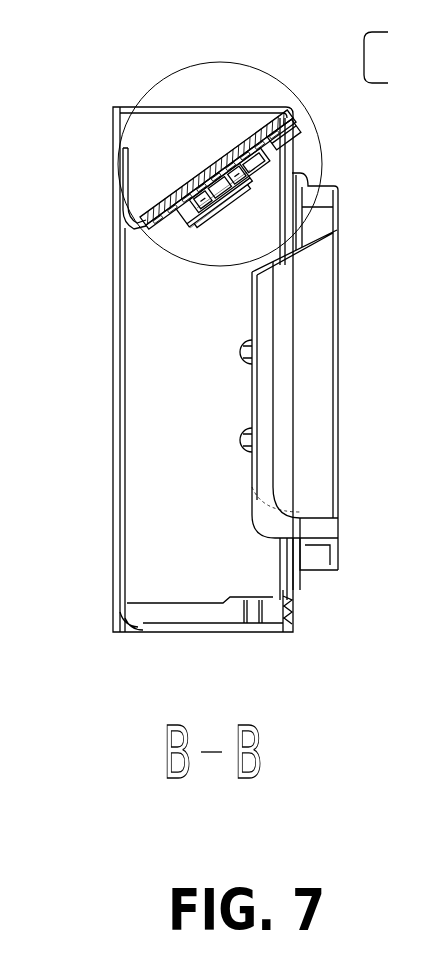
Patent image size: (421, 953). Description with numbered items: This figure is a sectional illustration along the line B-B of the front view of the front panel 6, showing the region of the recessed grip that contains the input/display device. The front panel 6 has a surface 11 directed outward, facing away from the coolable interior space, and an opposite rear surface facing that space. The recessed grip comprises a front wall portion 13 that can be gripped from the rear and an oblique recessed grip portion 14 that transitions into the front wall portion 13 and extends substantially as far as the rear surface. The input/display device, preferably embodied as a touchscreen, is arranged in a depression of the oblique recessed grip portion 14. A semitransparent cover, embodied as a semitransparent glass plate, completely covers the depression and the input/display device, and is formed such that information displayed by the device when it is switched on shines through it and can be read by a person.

The front panel 6 is at (97, 52).
The surface 11 is at (78, 376).
The front wall portion 13 is at (115, 170).
The oblique recessed grip portion 14 is at (180, 128).